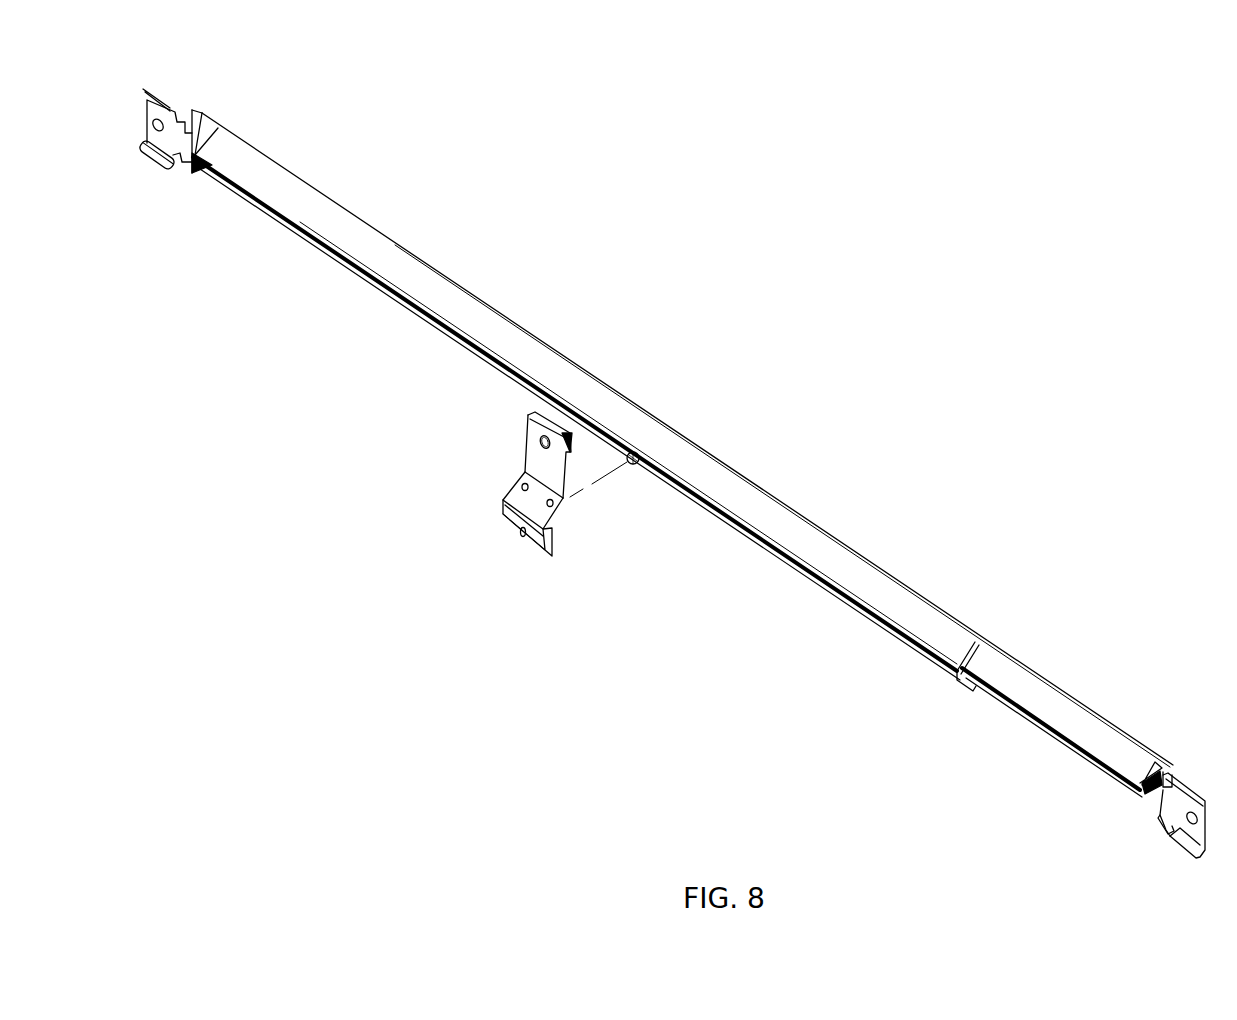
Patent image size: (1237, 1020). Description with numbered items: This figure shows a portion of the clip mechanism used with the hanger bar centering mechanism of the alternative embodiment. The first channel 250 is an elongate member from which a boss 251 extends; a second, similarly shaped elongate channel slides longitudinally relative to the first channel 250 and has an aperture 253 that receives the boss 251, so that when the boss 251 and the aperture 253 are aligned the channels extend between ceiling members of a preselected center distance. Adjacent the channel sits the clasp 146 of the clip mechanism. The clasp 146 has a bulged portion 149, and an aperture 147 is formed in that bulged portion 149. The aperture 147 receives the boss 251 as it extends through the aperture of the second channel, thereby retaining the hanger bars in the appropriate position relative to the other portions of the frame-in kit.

The clasp 146 is at (498, 487).
The aperture 147 is at (523, 540).
The bulged portion 149 is at (508, 527).
The first channel 250 is at (907, 618).
The boss 251 is at (635, 451).
The aperture 253 is at (643, 453).